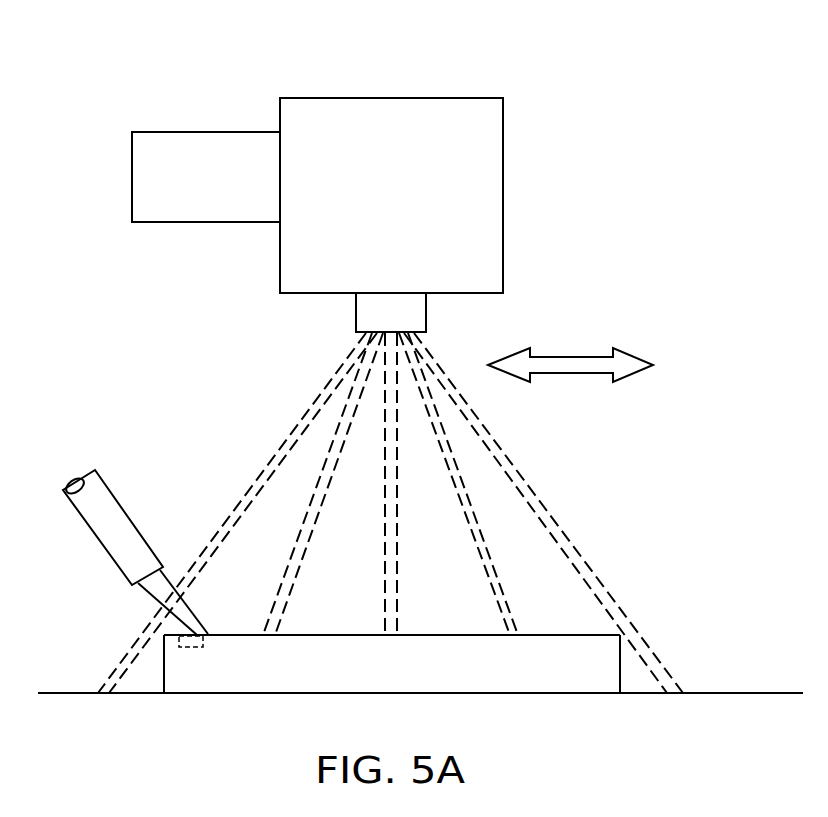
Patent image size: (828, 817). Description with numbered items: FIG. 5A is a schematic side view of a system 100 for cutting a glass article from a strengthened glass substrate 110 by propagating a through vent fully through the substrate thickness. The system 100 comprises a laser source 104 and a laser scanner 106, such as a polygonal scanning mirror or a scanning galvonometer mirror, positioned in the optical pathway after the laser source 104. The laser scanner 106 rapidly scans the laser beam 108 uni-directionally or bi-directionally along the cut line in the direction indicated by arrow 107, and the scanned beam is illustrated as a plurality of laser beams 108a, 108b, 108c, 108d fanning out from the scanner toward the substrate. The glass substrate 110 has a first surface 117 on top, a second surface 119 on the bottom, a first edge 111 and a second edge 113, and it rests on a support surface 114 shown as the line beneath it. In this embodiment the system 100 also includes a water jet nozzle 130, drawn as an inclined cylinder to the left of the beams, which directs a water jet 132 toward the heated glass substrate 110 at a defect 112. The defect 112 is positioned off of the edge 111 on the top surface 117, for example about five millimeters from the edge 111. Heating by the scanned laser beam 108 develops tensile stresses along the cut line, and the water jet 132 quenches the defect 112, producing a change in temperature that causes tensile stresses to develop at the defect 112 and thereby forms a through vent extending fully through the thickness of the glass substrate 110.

The system 100 is at (418, 379).
The laser source 104 is at (186, 132).
The laser scanner 106 is at (455, 98).
The arrow 107 is at (593, 357).
The laser beam 108 is at (390, 513).
The laser beam 108a is at (297, 428).
The laser beam 108b is at (308, 538).
The laser beam 108c is at (398, 538).
The laser beam 108d is at (487, 538).
The glass substrate 110 is at (406, 662).
The first edge 111 is at (163, 673).
The defect 112 is at (200, 645).
The second edge 113 is at (622, 667).
The support surface 114 is at (62, 693).
The first surface 117 is at (548, 635).
The second surface 119 is at (557, 693).
The water jet nozzle 130 is at (158, 508).
The water jet 132 is at (220, 607).